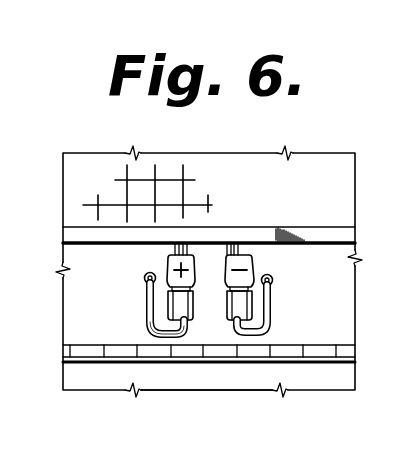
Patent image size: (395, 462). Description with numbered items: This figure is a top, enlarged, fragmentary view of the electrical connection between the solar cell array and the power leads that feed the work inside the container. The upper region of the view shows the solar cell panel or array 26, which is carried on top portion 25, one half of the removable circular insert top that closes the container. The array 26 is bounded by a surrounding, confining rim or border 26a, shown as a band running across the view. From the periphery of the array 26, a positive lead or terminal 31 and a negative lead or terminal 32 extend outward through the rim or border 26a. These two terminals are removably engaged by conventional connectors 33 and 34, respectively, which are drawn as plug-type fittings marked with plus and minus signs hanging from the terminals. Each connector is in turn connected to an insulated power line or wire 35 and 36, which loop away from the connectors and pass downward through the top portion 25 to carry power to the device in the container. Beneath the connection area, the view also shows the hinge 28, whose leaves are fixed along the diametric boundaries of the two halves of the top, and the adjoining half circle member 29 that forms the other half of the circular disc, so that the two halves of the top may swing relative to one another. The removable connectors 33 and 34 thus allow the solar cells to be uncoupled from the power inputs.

The top portion half 25 is at (73, 307).
The solar cell panel or array 26 is at (162, 185).
The rim or border 26a is at (345, 231).
The hinge 28 is at (70, 365).
The half circle member 29 is at (212, 384).
The positive lead or terminal 31 is at (175, 250).
The negative lead or terminal 32 is at (242, 246).
The connector 33 is at (150, 297).
The connector 34 is at (256, 258).
The insulated power line or wire 35 is at (150, 321).
The insulated power line or wire 36 is at (272, 300).